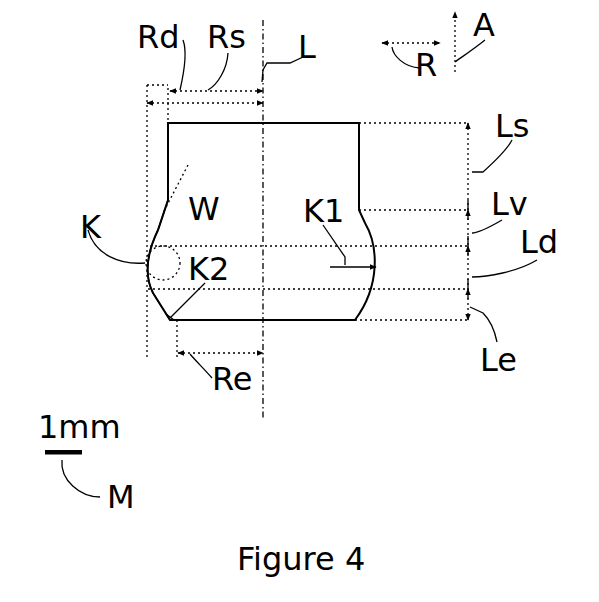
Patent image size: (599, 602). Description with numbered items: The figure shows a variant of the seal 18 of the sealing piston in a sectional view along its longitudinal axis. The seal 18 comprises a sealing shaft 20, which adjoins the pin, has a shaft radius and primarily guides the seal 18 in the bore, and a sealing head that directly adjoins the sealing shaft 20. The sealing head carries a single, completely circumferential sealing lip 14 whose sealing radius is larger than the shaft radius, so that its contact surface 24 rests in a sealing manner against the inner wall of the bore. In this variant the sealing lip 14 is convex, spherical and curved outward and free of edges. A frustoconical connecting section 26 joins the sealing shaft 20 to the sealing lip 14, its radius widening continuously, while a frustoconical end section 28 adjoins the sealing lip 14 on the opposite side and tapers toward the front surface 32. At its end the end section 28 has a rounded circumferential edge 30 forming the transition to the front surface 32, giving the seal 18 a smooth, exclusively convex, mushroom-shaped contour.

The sealing lip 14 is at (325, 283).
The seal 18 is at (112, 108).
The sealing shaft 20 is at (357, 230).
The contact surface 24 is at (140, 275).
The connecting section 26 is at (162, 228).
The end section 28 is at (168, 318).
The circumferential edge 30 is at (168, 319).
The front surface 32 is at (303, 322).